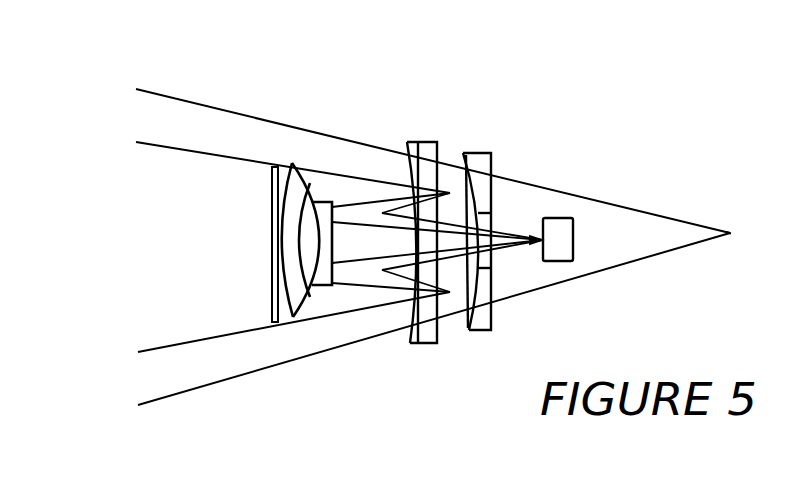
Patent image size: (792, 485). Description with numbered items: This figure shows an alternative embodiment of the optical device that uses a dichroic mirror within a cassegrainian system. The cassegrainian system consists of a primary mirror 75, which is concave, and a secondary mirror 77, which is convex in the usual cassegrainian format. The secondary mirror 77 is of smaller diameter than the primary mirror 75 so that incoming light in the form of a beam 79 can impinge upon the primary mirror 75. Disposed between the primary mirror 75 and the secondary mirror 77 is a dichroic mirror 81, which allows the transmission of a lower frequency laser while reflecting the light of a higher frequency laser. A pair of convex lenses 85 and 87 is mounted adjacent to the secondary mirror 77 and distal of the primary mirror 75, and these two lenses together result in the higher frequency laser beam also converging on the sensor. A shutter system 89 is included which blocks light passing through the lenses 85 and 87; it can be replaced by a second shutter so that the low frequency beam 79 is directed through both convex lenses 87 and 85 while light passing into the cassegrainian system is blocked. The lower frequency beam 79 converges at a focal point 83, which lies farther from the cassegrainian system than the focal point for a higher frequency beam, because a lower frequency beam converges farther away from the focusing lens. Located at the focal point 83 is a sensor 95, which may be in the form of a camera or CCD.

The beam 79 is at (195, 125).
The convex lens 87 is at (291, 165).
The convex lens 85 is at (310, 297).
The secondary mirror 77 is at (317, 203).
The shutter system 89 is at (272, 282).
The dichroic mirror 81 is at (423, 142).
The primary mirror 75 is at (480, 152).
The sensor 95 is at (560, 218).
The focal point 83 is at (730, 233).